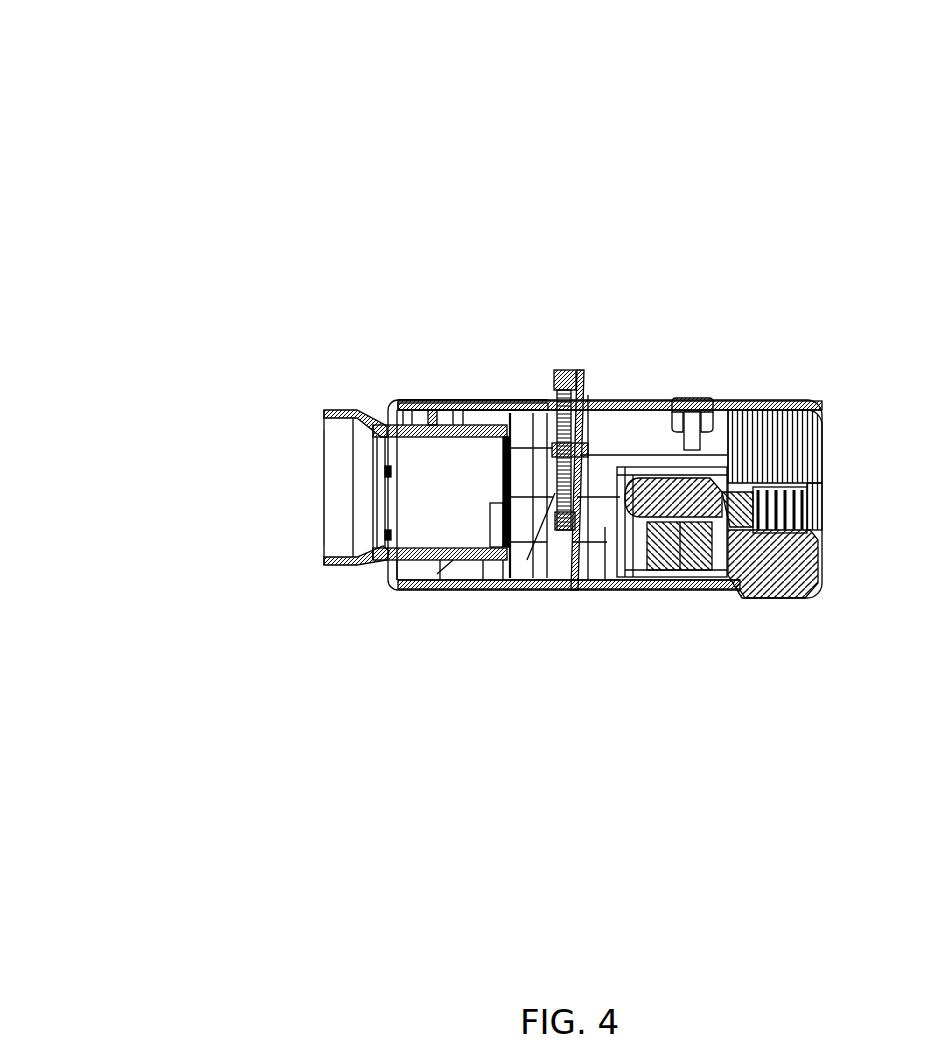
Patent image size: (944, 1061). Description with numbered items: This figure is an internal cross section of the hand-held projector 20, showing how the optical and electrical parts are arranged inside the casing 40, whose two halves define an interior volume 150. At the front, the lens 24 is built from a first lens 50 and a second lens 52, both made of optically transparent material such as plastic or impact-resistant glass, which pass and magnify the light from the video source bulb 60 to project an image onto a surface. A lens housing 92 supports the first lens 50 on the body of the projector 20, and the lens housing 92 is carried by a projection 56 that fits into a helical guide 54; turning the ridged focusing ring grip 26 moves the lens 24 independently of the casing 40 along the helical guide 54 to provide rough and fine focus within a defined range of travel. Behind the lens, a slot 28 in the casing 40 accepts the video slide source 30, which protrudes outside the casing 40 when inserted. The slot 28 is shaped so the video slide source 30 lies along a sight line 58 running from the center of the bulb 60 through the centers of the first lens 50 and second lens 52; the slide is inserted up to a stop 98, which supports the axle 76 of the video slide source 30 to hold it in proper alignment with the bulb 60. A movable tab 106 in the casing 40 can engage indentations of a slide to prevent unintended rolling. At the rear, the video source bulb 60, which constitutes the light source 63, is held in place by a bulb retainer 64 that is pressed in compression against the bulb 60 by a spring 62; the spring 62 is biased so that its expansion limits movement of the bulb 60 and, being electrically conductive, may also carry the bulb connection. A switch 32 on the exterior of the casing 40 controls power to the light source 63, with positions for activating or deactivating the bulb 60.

The projector 20 is at (172, 797).
The lens 24 is at (380, 563).
The focusing ring grip 26 is at (330, 406).
The slot 28 is at (576, 490).
The video slide source 30 is at (562, 370).
The switch 32 is at (697, 398).
The casing 40 is at (551, 589).
The first lens 50 is at (376, 490).
The second lens 52 is at (500, 425).
The helical guide 54 is at (428, 400).
The projection 56 is at (443, 579).
The sight line 58 is at (599, 493).
The video source bulb 60 is at (678, 520).
The spring 62 is at (812, 405).
The light source 63 is at (725, 575).
The bulb retainer 64 is at (758, 407).
The axle 76 is at (550, 400).
The lens housing 92 is at (388, 565).
The stop 98 is at (553, 495).
The movable tab 106 is at (588, 395).
The interior volume 150 is at (605, 527).